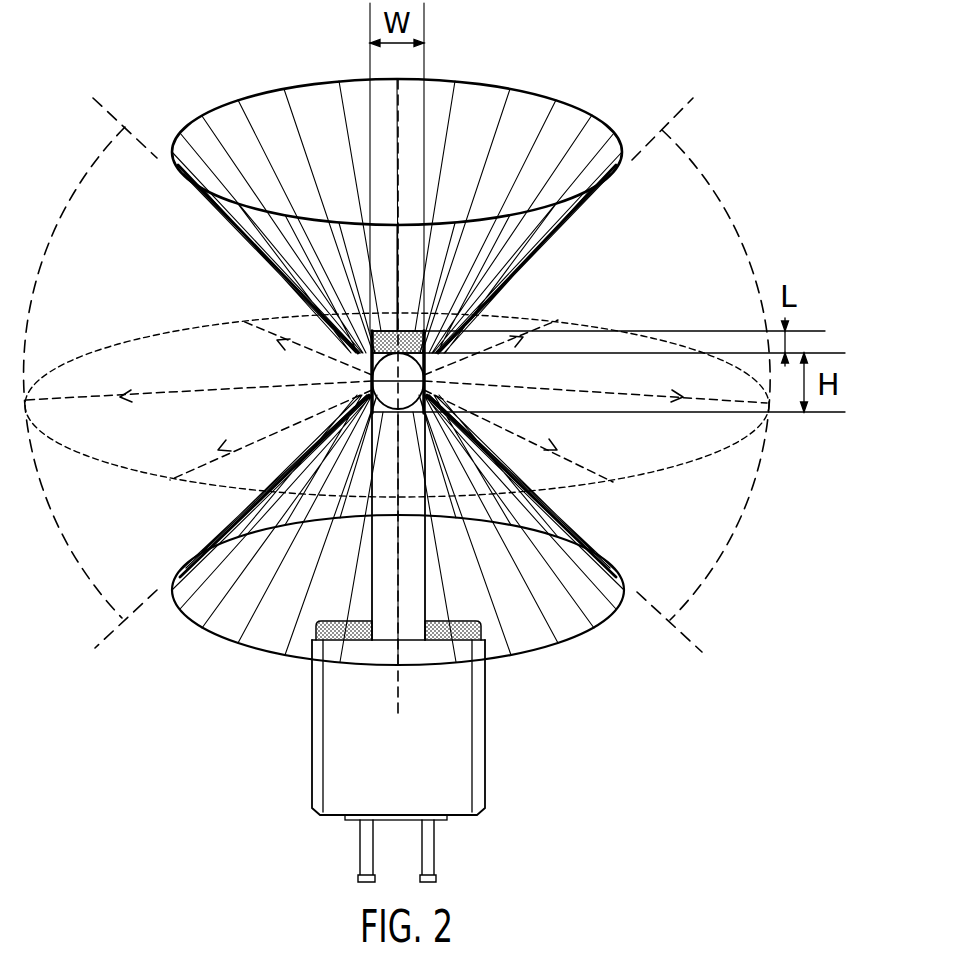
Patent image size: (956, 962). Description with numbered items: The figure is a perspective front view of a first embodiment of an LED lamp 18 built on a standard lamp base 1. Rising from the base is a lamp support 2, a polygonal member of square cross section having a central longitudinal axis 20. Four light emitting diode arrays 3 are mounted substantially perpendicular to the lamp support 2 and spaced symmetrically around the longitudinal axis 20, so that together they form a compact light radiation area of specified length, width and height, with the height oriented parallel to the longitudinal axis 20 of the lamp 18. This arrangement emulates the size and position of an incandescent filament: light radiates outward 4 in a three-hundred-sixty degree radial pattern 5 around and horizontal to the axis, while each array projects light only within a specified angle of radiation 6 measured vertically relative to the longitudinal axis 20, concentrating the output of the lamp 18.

The lamp base 1 is at (402, 783).
The lamp support 2 is at (412, 528).
The light emitting diode array 3 is at (330, 410).
The outward light radiation 4 is at (275, 383).
The 360 degree radial pattern 5 is at (126, 338).
The specified angle of light radiation 6 is at (394, 375).
The LED lamp 18 is at (375, 692).
The central longitudinal axis 20 is at (398, 573).